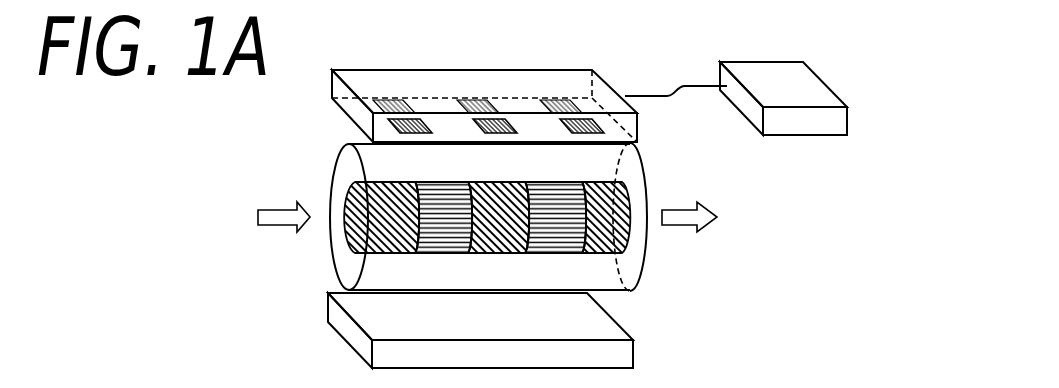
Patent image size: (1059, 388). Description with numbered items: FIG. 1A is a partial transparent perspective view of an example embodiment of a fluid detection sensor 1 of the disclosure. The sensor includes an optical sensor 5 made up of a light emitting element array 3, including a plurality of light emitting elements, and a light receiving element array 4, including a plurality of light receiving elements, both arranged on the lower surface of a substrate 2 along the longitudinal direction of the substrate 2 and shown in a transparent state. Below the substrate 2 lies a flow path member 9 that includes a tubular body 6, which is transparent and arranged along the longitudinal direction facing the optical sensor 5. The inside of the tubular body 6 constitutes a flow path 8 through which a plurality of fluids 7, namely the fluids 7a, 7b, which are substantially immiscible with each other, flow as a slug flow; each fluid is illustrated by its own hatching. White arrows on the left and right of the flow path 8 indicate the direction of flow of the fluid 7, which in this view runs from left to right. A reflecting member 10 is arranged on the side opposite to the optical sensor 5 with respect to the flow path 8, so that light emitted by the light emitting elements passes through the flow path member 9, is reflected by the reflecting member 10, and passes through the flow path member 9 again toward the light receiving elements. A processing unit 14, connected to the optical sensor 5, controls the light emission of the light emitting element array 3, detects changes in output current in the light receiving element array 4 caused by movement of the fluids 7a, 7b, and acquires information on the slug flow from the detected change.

The fluid detection sensor 1 is at (578, 48).
The substrate 2 is at (355, 80).
The light emitting element array 3 is at (387, 107).
The light receiving element array 4 is at (410, 123).
The optical sensor 5 is at (613, 90).
The tubular body 6 is at (348, 165).
The fluids 7 is at (262, 317).
The fluid 7a is at (432, 222).
The fluid 7b is at (373, 258).
The flow path 8 is at (373, 217).
The flow path member 9 is at (643, 170).
The reflecting member 10 is at (627, 322).
The processing unit 14 is at (837, 90).